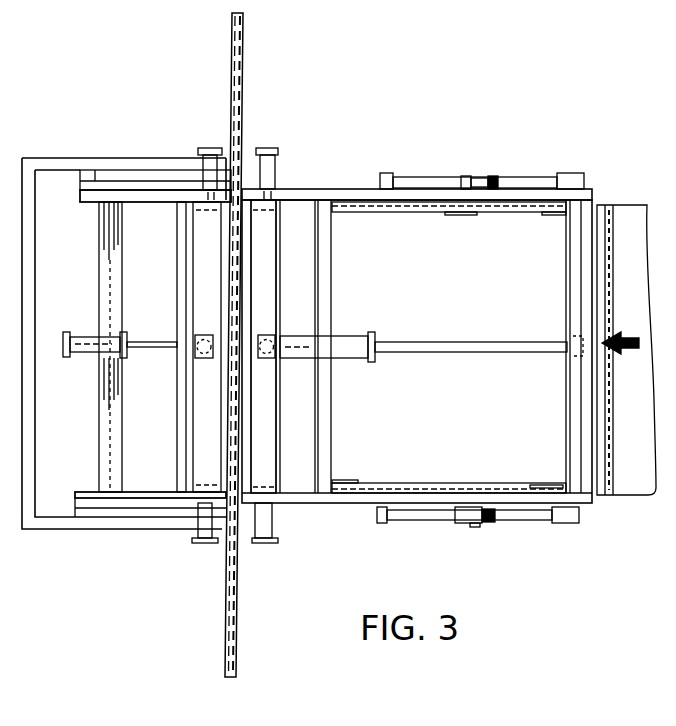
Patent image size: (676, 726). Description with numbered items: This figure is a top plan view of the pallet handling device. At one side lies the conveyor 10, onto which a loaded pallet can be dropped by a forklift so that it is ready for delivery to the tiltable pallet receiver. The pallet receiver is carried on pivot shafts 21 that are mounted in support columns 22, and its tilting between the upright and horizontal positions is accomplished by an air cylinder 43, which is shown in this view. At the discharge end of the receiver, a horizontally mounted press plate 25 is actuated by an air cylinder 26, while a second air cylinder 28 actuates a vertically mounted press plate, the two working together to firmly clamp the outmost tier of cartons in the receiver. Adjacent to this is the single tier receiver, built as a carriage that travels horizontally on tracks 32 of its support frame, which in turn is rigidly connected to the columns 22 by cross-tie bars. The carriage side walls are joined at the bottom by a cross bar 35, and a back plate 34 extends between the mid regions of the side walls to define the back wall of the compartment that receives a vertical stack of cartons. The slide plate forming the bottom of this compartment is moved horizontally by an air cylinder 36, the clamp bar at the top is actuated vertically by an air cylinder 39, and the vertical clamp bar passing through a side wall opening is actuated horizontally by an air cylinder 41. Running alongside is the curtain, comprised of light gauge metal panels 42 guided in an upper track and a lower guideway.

The conveyor 10 is at (641, 423).
The pivot shafts 21 is at (483, 177).
The support columns 22 is at (497, 177).
The press plate 25 is at (265, 222).
The air cylinder 26 is at (264, 334).
The air cylinder 28 is at (272, 527).
The tracks 32 is at (152, 490).
The back plate 34 is at (180, 398).
The cross bar 35 is at (107, 417).
The air cylinder 36 is at (92, 342).
The air cylinder 39 is at (203, 358).
The air cylinder 41 is at (187, 532).
The metal panels 42 is at (242, 80).
The air cylinder 43 is at (302, 348).